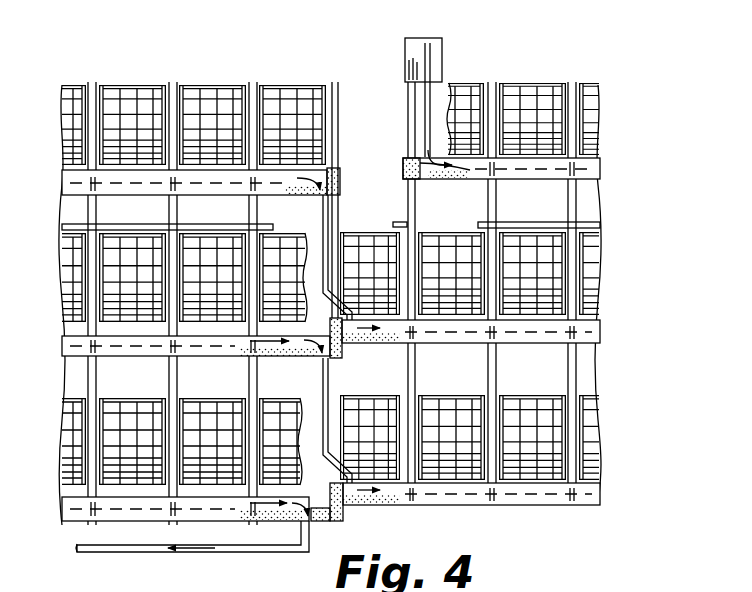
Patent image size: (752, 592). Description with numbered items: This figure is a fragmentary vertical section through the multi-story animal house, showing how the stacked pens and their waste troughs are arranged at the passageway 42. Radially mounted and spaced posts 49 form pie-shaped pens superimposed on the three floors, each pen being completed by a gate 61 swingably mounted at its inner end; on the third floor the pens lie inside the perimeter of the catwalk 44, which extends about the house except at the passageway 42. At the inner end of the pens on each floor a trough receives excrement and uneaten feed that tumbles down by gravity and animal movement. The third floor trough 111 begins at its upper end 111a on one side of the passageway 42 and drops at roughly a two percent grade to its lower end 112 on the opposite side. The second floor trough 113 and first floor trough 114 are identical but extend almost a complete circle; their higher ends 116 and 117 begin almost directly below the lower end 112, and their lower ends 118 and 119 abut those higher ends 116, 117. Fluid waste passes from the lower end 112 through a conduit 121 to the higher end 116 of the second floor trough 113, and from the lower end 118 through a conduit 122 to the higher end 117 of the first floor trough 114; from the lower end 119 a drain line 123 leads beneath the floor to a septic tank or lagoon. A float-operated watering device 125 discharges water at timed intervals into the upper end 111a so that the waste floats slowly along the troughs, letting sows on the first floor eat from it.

The passageway 42 is at (385, 143).
The catwalk 44 is at (78, 225).
The post 49 is at (173, 83).
The gate 61 is at (333, 256).
The third floor trough 111 is at (594, 177).
The upper end 111a is at (433, 181).
The lower end 112 is at (340, 186).
The second floor trough 113 is at (594, 328).
The first floor trough 114 is at (594, 489).
The higher end 116 is at (356, 340).
The higher end 117 is at (358, 505).
The lower end 118 is at (311, 354).
The lower end 119 is at (326, 523).
The conduit 121 is at (321, 222).
The conduit 122 is at (321, 388).
The drain line 123 is at (216, 552).
The watering device 125 is at (436, 45).